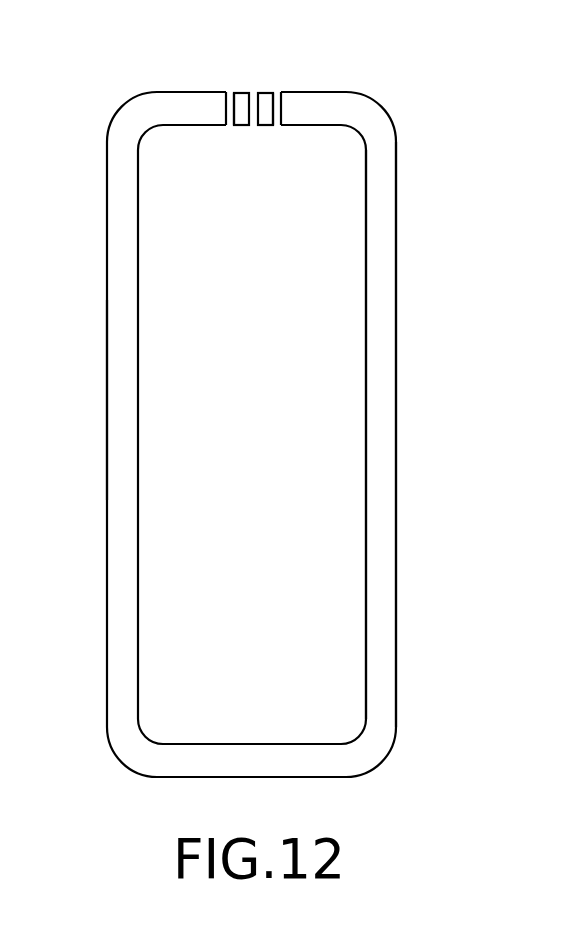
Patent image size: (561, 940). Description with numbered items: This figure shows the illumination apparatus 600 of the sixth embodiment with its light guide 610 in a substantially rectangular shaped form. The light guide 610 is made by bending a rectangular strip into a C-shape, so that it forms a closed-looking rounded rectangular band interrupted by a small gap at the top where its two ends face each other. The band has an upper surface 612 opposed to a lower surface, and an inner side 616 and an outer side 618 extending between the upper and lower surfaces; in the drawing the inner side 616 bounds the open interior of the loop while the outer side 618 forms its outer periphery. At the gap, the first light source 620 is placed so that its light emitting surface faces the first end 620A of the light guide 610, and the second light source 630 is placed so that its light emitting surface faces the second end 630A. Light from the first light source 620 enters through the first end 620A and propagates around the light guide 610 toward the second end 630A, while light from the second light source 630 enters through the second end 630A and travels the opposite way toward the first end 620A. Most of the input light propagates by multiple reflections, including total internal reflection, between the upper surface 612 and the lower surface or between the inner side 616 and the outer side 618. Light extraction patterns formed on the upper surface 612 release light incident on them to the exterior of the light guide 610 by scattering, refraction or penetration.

The illumination apparatus 600 is at (70, 422).
The light guide 610 is at (297, 413).
The upper surface 612 is at (385, 198).
The inner side 616 is at (367, 311).
The outer side 618 is at (397, 267).
The first light source 620 is at (241, 92).
The second light source 630 is at (267, 92).
The first end 620A is at (225, 115).
The second end 630A is at (282, 115).